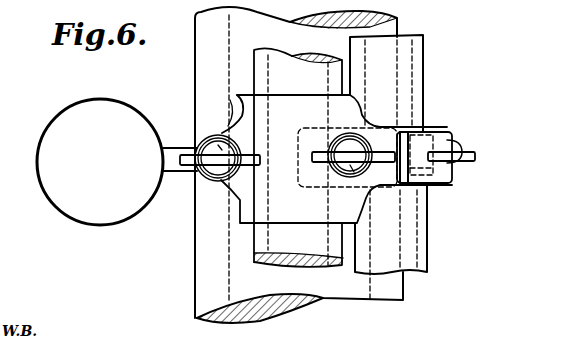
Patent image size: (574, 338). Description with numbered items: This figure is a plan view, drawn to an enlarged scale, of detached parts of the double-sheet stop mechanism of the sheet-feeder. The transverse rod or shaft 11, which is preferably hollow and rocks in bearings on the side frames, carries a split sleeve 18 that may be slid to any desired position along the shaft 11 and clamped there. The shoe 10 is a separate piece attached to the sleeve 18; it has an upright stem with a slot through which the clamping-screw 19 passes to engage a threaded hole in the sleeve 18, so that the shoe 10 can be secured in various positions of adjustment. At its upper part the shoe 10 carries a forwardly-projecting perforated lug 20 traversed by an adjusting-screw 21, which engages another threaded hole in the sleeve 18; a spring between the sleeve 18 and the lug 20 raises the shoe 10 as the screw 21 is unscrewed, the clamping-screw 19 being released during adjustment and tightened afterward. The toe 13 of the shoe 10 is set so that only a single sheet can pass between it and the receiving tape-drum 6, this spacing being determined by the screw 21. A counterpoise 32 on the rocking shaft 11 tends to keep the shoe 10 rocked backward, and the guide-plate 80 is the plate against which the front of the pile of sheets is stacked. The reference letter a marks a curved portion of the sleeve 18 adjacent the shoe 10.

The first or receiving tape-drum 6 is at (299, 165).
The shoe 10 is at (454, 138).
The transverse rod or shaft 11 is at (298, 157).
The toe 13 is at (300, 165).
The split sleeve 18 is at (323, 159).
The curved lip a is at (224, 112).
The clamping-screw 19 is at (432, 143).
The forwardly-projecting perforated lug 20 is at (385, 133).
The adjusting-screw 21 is at (348, 168).
The counterpoise 32 is at (117, 162).
The guide-plate 80 is at (391, 241).